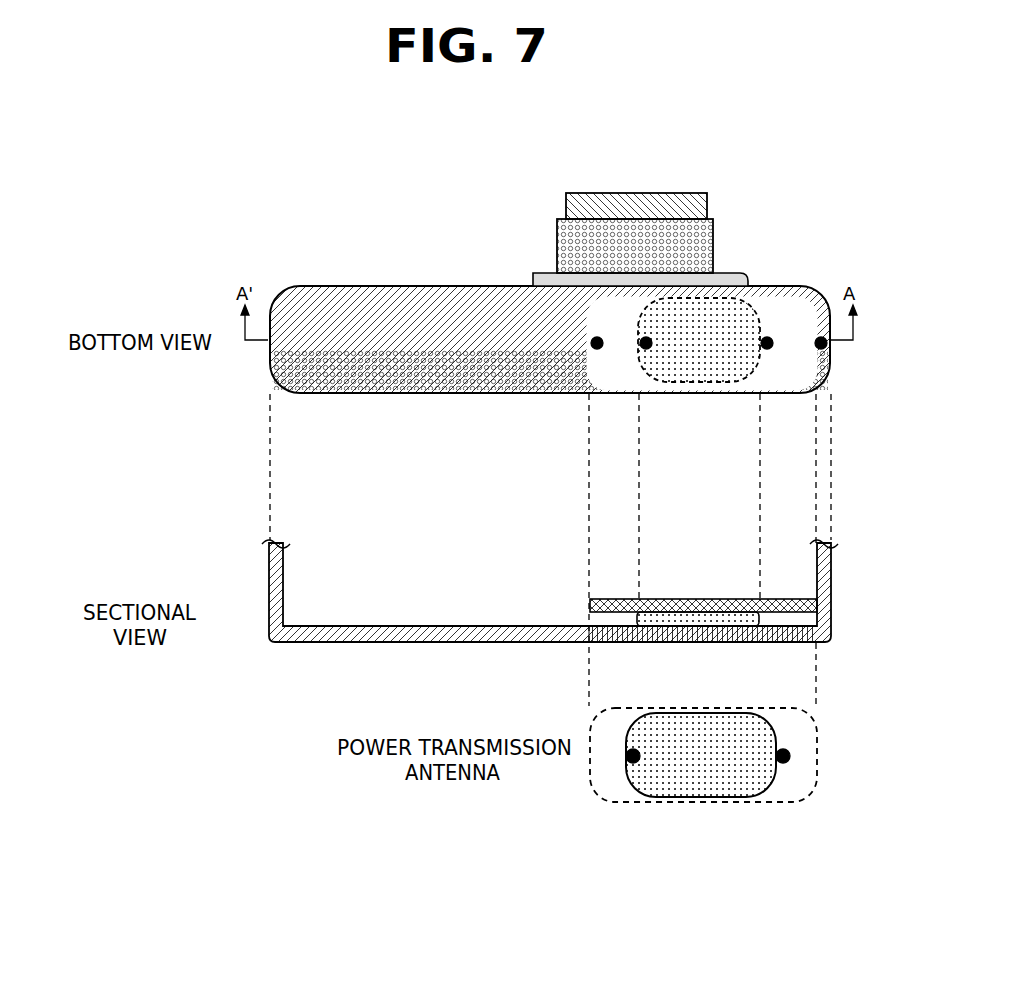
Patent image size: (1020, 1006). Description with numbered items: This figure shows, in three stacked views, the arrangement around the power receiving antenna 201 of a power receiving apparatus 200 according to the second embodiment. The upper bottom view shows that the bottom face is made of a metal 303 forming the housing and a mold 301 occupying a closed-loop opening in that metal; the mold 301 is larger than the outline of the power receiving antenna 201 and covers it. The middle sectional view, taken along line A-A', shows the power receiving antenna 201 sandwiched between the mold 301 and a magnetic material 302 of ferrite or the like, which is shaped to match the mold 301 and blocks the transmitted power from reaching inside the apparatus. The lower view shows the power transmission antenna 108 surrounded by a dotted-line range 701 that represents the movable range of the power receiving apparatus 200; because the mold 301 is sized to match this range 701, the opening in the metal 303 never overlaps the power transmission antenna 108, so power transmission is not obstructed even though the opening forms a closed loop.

The power receiving apparatus 200 is at (559, 431).
The power receiving antenna 201 is at (748, 303).
The mold 301 is at (790, 384).
The magnetic material 302 is at (660, 598).
The metal 303 is at (402, 396).
The power transmission antenna 108 is at (686, 772).
The range 701 is at (817, 770).